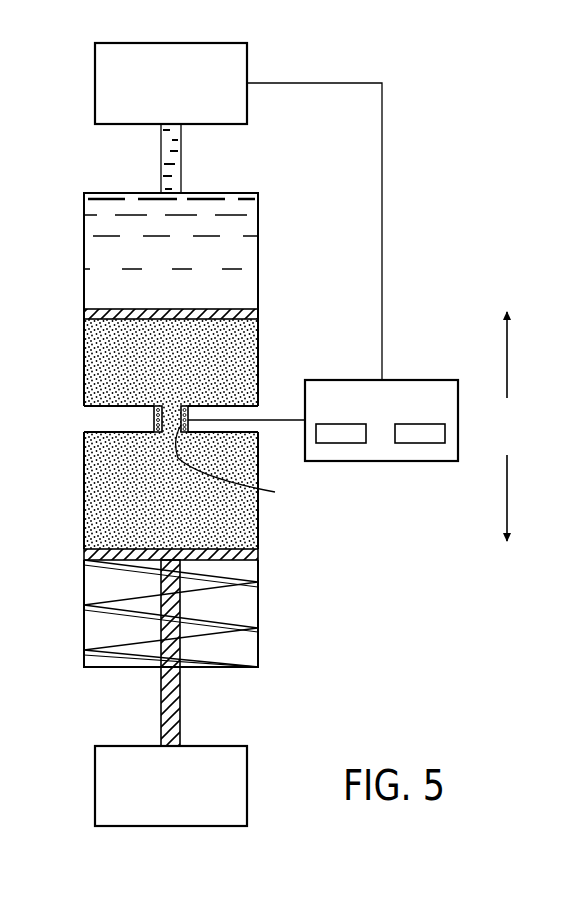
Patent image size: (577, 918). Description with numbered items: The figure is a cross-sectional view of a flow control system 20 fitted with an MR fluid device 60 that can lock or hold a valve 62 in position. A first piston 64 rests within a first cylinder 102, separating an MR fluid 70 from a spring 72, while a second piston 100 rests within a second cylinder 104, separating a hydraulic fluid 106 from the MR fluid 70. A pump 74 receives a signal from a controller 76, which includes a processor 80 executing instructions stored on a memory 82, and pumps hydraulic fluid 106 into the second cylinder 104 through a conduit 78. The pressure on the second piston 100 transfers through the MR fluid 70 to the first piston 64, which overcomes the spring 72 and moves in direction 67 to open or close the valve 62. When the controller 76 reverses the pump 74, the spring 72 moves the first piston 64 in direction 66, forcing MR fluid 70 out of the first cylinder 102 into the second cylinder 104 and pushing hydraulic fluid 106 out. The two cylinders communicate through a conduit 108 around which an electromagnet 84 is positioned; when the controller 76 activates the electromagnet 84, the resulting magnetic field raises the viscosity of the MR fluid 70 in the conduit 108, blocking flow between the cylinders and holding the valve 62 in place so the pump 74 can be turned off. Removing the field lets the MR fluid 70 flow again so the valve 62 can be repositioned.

The flow control system 20 is at (364, 671).
The MR fluid device 60 is at (431, 210).
The valve 62 is at (249, 786).
The first piston 64 is at (258, 554).
The direction 66 is at (507, 358).
The direction 67 is at (509, 495).
The MR fluid 70 is at (100, 372).
The spring 72 is at (218, 637).
The pump 74 is at (95, 97).
The controller 76 is at (382, 462).
The conduit 78 is at (161, 160).
The processor 80 is at (332, 444).
The memory 82 is at (428, 444).
The electromagnet 84 is at (152, 420).
The second piston 100 is at (258, 316).
The first cylinder 102 is at (84, 468).
The second cylinder 104 is at (84, 224).
The hydraulic fluid 106 is at (238, 226).
The conduit 108 is at (243, 465).